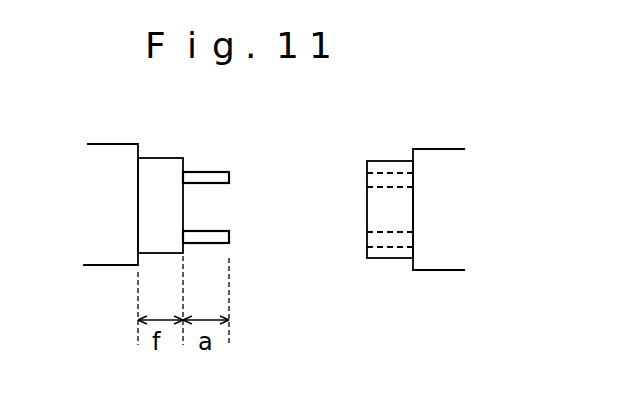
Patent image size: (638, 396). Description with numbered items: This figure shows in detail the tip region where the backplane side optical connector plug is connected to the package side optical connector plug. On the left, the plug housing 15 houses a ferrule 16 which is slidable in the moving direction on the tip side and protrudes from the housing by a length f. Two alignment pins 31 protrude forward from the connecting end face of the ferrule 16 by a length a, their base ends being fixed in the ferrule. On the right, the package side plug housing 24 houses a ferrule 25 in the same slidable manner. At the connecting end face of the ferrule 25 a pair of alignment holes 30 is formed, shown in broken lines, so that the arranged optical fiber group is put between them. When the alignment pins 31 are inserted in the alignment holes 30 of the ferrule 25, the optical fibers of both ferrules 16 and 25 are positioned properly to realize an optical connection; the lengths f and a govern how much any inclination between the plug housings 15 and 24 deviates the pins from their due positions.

The plug housing 15 is at (101, 266).
The ferrule 16 is at (161, 158).
The alignment pins 31 is at (226, 172).
The package side plug housing 24 is at (447, 166).
The ferrule 25 is at (367, 211).
The alignment holes 30 is at (367, 177).